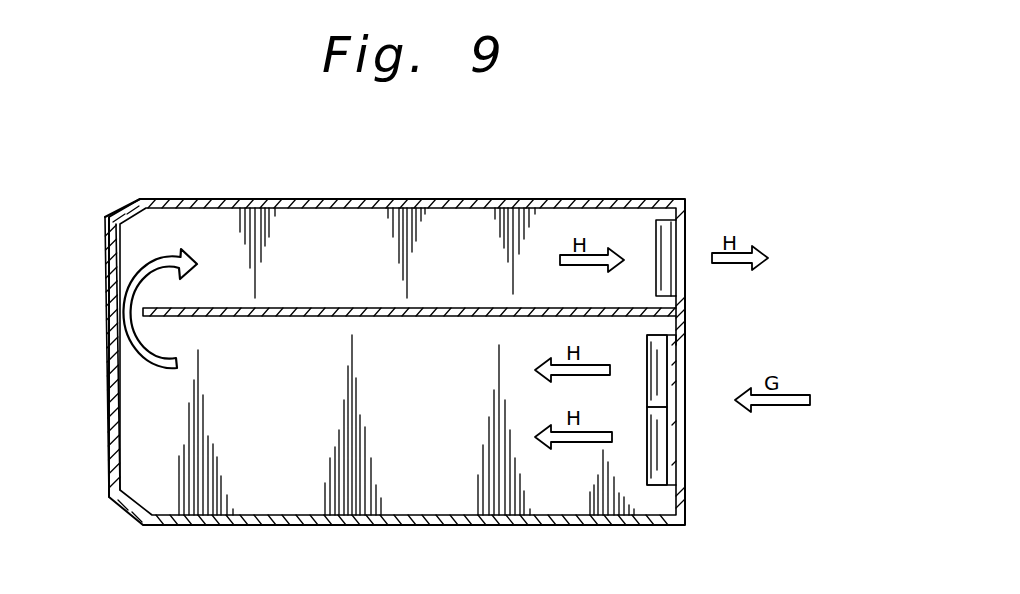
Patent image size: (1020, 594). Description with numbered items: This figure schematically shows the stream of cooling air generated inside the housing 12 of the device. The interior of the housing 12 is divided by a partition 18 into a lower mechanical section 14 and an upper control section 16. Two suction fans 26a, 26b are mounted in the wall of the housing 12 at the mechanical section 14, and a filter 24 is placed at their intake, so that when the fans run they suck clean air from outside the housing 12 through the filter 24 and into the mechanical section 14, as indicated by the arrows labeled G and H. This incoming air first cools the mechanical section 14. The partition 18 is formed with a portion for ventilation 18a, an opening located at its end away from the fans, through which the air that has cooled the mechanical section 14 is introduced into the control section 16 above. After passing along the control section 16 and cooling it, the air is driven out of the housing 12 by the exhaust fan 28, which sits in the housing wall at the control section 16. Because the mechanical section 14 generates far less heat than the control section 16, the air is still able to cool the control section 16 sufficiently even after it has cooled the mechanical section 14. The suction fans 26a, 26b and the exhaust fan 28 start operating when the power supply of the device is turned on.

The housing 12 is at (107, 383).
The mechanical section 14 is at (458, 452).
The control section 16 is at (375, 240).
The partition 18 is at (330, 307).
The portion for ventilation 18a is at (121, 308).
The filter 24 is at (711, 411).
The suction fan 26a is at (663, 462).
The suction fan 26b is at (655, 358).
The exhaust fan 28 is at (663, 238).